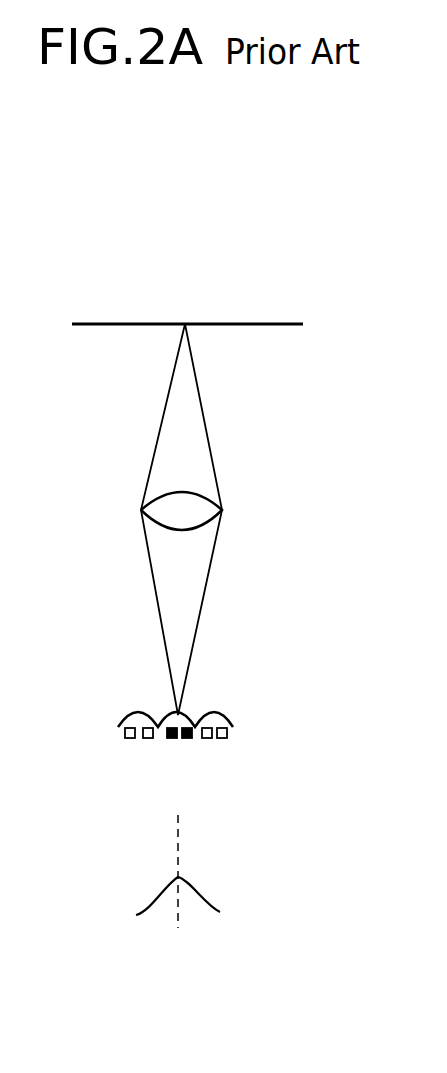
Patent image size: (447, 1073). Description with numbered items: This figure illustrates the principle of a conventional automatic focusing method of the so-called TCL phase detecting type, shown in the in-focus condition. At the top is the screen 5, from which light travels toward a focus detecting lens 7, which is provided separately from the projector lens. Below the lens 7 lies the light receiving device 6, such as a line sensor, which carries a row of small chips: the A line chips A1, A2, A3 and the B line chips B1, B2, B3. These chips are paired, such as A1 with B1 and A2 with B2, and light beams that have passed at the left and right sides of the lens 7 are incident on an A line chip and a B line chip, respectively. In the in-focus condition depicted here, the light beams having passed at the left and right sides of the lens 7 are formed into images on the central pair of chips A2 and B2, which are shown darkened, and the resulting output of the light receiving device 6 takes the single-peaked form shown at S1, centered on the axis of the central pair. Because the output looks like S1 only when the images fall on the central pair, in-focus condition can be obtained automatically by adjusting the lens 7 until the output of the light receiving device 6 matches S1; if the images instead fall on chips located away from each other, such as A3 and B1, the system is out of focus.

The screen 5 is at (278, 324).
The focus detecting lens 7 is at (222, 510).
The light receiving device 6 is at (235, 732).
The A line chip A1 is at (127, 738).
The B line chip B1 is at (146, 738).
The A line chip A2 is at (170, 738).
The B line chip B2 is at (186, 738).
The A line chip A3 is at (206, 738).
The B line chip B3 is at (226, 738).
The output S1 is at (155, 898).